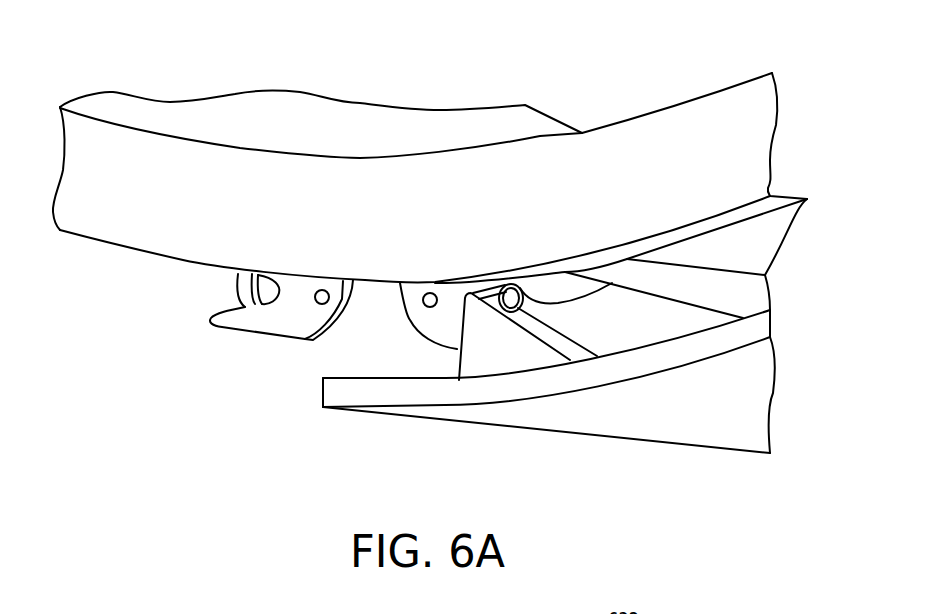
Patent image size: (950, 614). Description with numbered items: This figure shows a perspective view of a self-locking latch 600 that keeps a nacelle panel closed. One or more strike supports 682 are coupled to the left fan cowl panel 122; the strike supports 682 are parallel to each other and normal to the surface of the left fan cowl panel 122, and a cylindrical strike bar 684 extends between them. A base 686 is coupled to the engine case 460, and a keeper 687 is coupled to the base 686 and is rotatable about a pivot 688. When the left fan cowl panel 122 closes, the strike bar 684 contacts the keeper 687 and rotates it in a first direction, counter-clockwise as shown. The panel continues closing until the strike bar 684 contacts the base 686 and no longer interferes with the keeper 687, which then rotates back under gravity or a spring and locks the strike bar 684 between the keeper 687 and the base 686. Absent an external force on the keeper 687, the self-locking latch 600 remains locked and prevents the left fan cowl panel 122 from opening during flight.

The engine case 460 is at (649, 117).
The self-locking latch 600 is at (245, 432).
The strike support 682 is at (457, 367).
The strike bar 684 is at (528, 308).
The base 686 is at (403, 320).
The keeper 687 is at (612, 282).
The pivot 688 is at (431, 292).
The left fan cowl panel 122 is at (693, 613).